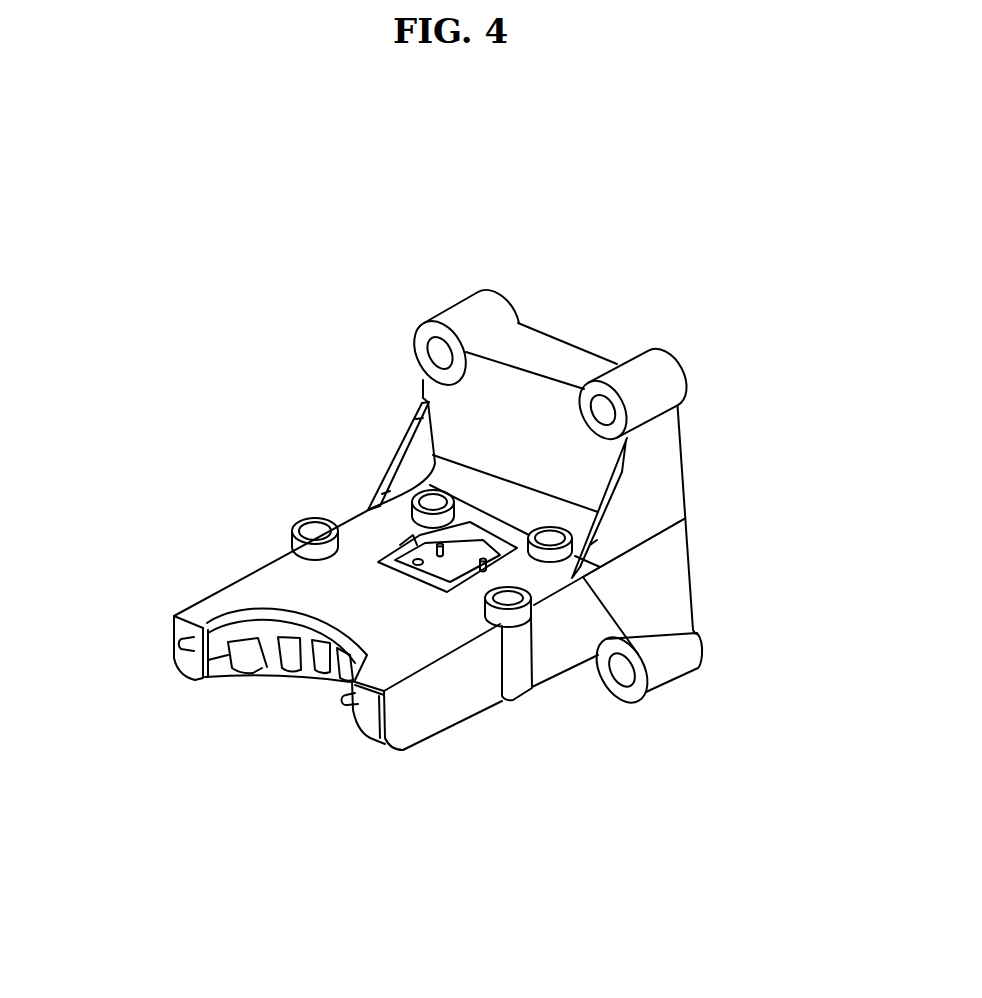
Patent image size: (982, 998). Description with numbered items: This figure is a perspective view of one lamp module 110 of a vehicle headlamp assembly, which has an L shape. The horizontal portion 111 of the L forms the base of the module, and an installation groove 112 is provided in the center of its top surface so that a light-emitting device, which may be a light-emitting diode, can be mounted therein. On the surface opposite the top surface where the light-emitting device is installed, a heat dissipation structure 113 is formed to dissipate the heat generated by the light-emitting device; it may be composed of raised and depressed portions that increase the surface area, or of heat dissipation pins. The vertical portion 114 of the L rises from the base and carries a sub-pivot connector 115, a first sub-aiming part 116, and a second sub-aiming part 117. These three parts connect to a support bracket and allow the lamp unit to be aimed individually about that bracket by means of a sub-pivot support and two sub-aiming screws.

The lamp module 110 is at (297, 351).
The horizontal portion 111 is at (460, 695).
The installation groove 112 is at (468, 541).
The heat dissipation structure 113 is at (296, 657).
The vertical portion 114 is at (659, 477).
The sub-pivot connector 115 is at (672, 361).
The first sub-aiming part 116 is at (491, 293).
The second sub-aiming part 117 is at (702, 646).